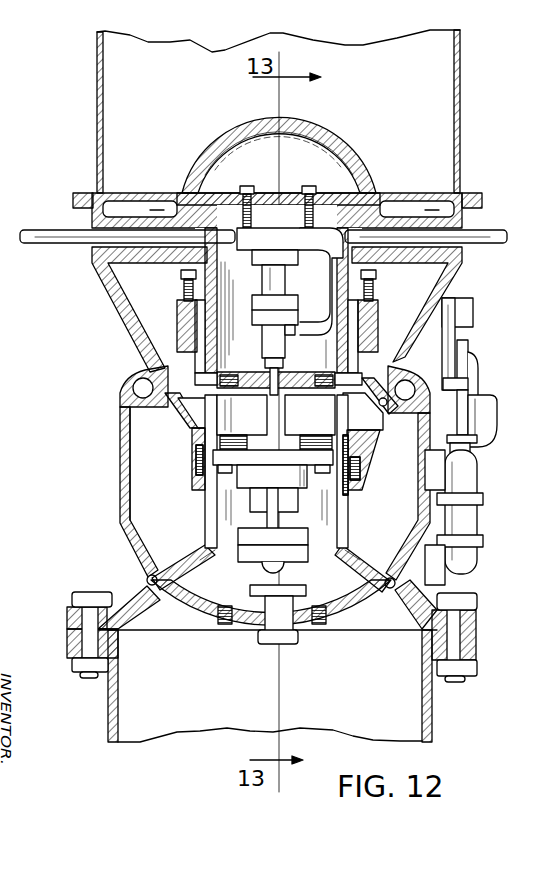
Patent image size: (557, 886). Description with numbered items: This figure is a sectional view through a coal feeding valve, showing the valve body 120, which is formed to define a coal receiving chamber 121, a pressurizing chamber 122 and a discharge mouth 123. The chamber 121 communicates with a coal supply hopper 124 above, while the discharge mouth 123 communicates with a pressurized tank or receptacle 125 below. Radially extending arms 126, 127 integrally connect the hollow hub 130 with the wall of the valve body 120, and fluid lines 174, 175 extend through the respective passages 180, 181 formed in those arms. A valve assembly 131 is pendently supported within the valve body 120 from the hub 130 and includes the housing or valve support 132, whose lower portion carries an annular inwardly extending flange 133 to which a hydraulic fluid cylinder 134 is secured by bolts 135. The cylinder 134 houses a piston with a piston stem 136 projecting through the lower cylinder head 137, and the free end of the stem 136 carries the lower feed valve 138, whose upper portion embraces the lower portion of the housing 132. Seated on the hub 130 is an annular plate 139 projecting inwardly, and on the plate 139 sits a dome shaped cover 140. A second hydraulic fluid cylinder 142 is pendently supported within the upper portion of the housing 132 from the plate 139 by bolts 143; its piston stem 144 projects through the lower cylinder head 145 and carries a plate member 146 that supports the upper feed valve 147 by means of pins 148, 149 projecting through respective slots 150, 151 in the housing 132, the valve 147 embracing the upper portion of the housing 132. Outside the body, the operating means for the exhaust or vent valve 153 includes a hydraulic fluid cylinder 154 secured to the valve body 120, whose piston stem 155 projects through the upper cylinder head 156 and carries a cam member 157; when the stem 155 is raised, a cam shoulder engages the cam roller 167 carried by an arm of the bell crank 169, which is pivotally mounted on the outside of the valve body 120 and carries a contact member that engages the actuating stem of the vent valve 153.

The valve body 120 is at (120, 478).
The coal receiving chamber 121 is at (426, 291).
The pressurizing chamber 122 is at (139, 451).
The discharge mouth 123 is at (144, 614).
The coal supply hopper 124 is at (462, 137).
The pressurized tank or receptacle 125 is at (433, 712).
The radially extending arm 126 is at (125, 212).
The radially extending arm 127 is at (401, 212).
The hollow hub 130 is at (174, 268).
The valve assembly 131 is at (368, 438).
The housing or valve support 132 is at (329, 330).
The annular inwardly extending flange 133 is at (309, 436).
The hydraulic fluid cylinder 134 is at (300, 556).
The bolts 135 is at (323, 475).
The piston stem 136 is at (264, 600).
The lower cylinder head 137 is at (294, 591).
The lower feed valve 138 is at (352, 548).
The annular plate 139 is at (337, 196).
The dome shaped cover 140 is at (324, 134).
The second hydraulic fluid cylinder 142 is at (262, 294).
The bolts 143 is at (303, 190).
The piston stem 144 is at (267, 367).
The lower cylinder head 145 is at (289, 367).
The plate member 146 is at (255, 394).
The upper feed valve 147 is at (188, 432).
The pin 148 is at (191, 375).
The pin 149 is at (357, 380).
The slot 150 is at (196, 418).
The slot 151 is at (338, 396).
The exhaust or vent valve 153 is at (479, 373).
The hydraulic fluid cylinder 154 is at (478, 516).
The piston stem 155 is at (478, 424).
The upper cylinder head 156 is at (480, 443).
The cam member 157 is at (456, 332).
The cam roller 167 is at (463, 354).
The bell crank 169 is at (470, 387).
The fluid line 174 is at (33, 229).
The fluid line 175 is at (488, 228).
The passage 180 is at (157, 216).
The passage 181 is at (432, 216).